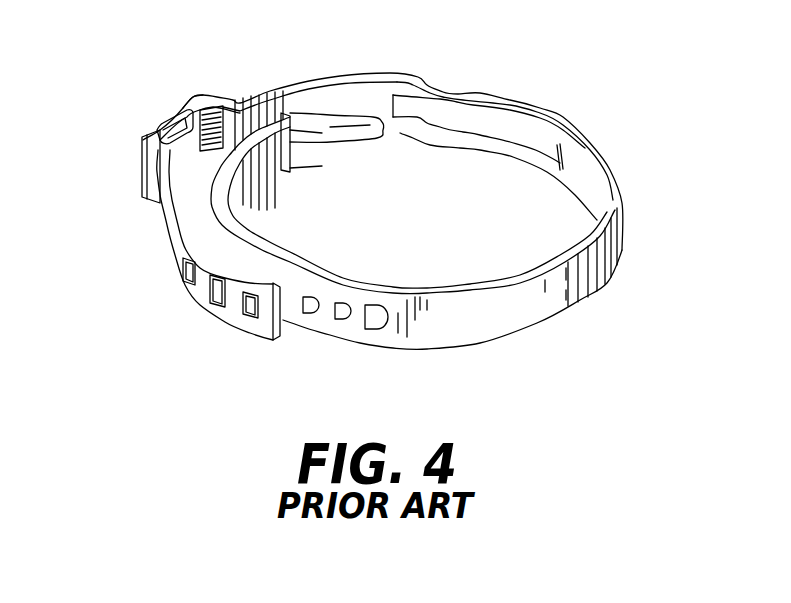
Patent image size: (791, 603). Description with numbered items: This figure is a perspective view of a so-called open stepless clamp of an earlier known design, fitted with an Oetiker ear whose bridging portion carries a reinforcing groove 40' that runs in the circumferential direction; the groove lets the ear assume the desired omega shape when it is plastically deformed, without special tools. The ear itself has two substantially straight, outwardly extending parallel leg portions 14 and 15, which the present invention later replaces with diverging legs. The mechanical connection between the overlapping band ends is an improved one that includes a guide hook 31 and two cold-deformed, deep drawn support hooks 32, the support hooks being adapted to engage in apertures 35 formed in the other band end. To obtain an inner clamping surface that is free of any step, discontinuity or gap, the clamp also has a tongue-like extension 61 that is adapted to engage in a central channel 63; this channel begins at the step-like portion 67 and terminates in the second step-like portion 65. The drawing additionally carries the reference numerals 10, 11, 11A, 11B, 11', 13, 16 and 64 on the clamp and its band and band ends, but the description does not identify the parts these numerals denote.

The clamp ring 10 is at (598, 310).
The clamp band 11 is at (456, 209).
The outer band end 11A is at (157, 233).
The inner band end 11B is at (262, 242).
The inner band portion 11' is at (498, 124).
The connecting structure 13 is at (157, 107).
The leg portion 14 is at (152, 162).
The leg portion 15 is at (217, 97).
The hook 16 is at (170, 130).
The reinforcing groove 40' is at (180, 82).
The guide hook 31 is at (378, 330).
The support hooks 32 is at (303, 315).
The apertures 35 is at (247, 313).
The tongue-like extension 61 is at (340, 140).
The central channel 63 is at (462, 128).
The guide tongues 64 is at (408, 100).
The second step-like portion 65 is at (557, 157).
The step-like portion 67 is at (433, 77).